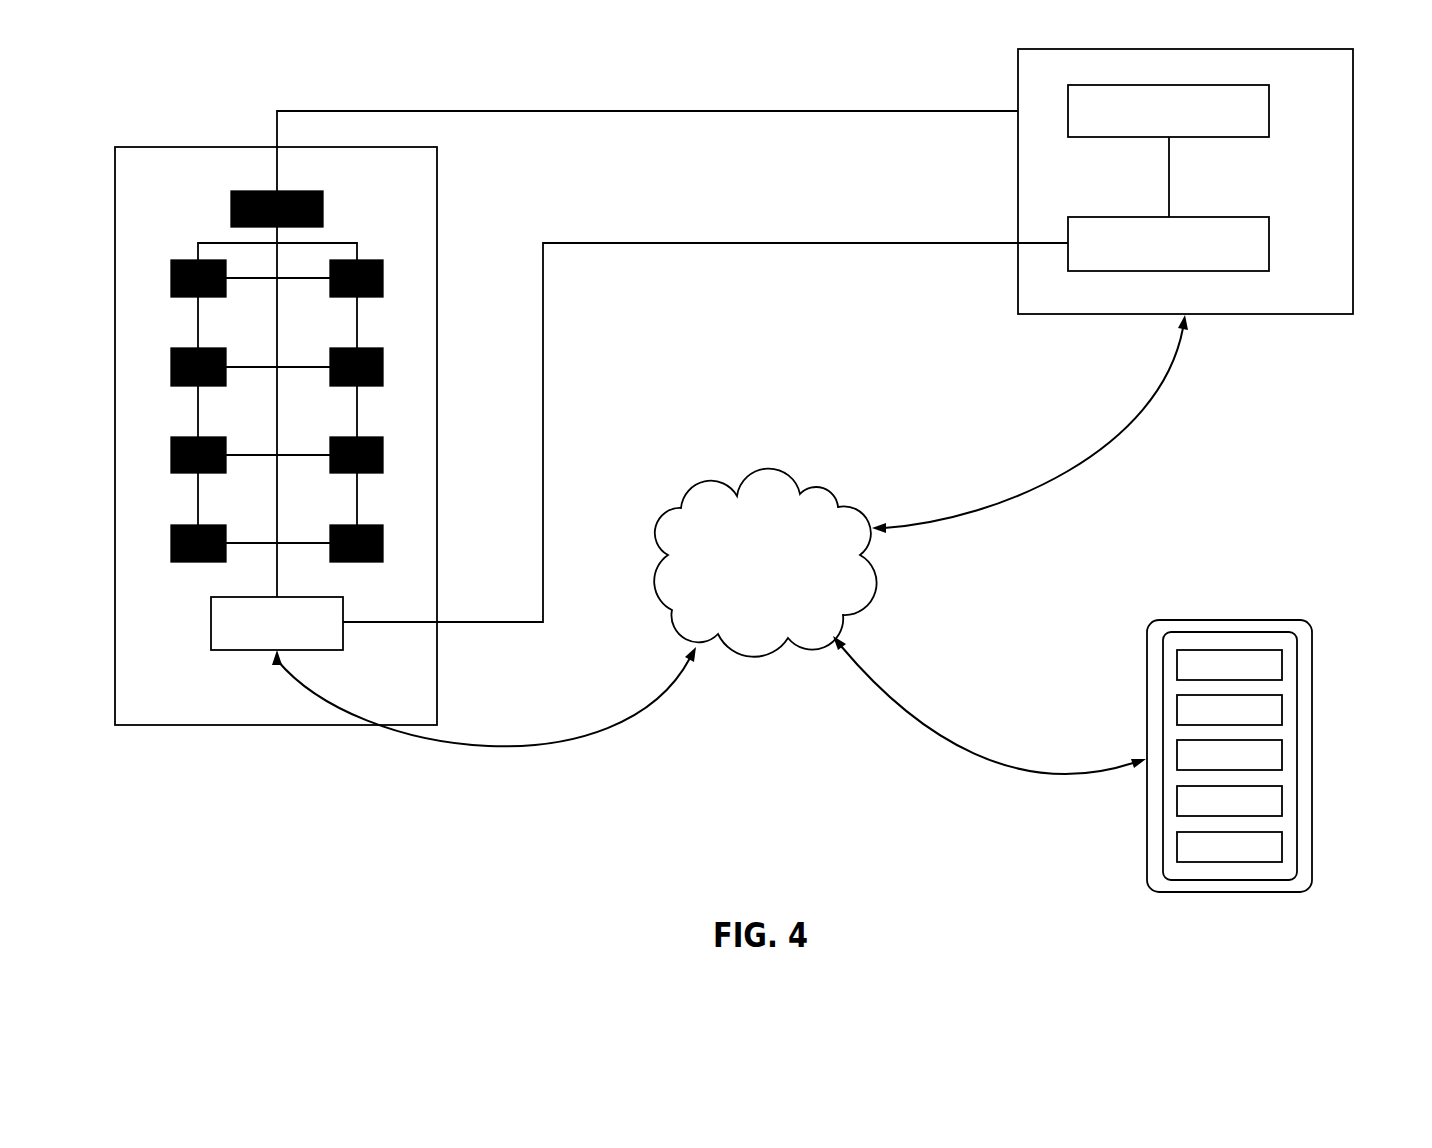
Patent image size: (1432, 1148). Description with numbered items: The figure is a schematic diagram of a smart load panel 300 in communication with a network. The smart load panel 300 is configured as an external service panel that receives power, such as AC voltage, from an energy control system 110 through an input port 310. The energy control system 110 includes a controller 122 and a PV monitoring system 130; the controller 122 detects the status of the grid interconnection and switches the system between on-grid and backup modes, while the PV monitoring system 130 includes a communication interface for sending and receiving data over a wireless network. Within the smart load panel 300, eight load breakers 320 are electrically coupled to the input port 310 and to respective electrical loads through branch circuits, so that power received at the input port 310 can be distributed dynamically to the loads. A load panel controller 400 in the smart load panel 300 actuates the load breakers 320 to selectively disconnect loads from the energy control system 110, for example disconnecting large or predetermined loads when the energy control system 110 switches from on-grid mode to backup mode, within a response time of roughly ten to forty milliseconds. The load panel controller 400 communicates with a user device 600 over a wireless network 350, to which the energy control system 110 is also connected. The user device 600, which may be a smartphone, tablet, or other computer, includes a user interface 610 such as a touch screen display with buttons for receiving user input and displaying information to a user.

The energy control system 110 is at (1353, 146).
The controller 122 is at (1269, 241).
The PV monitoring system 130 is at (1269, 120).
The smart load panel 300 is at (437, 190).
The input port 310 is at (323, 209).
The load breakers 320 is at (272, 412).
The wireless network 350 is at (808, 492).
The load panel controller 400 is at (211, 624).
The user device 600 is at (1278, 605).
The user interface 610 is at (1288, 831).